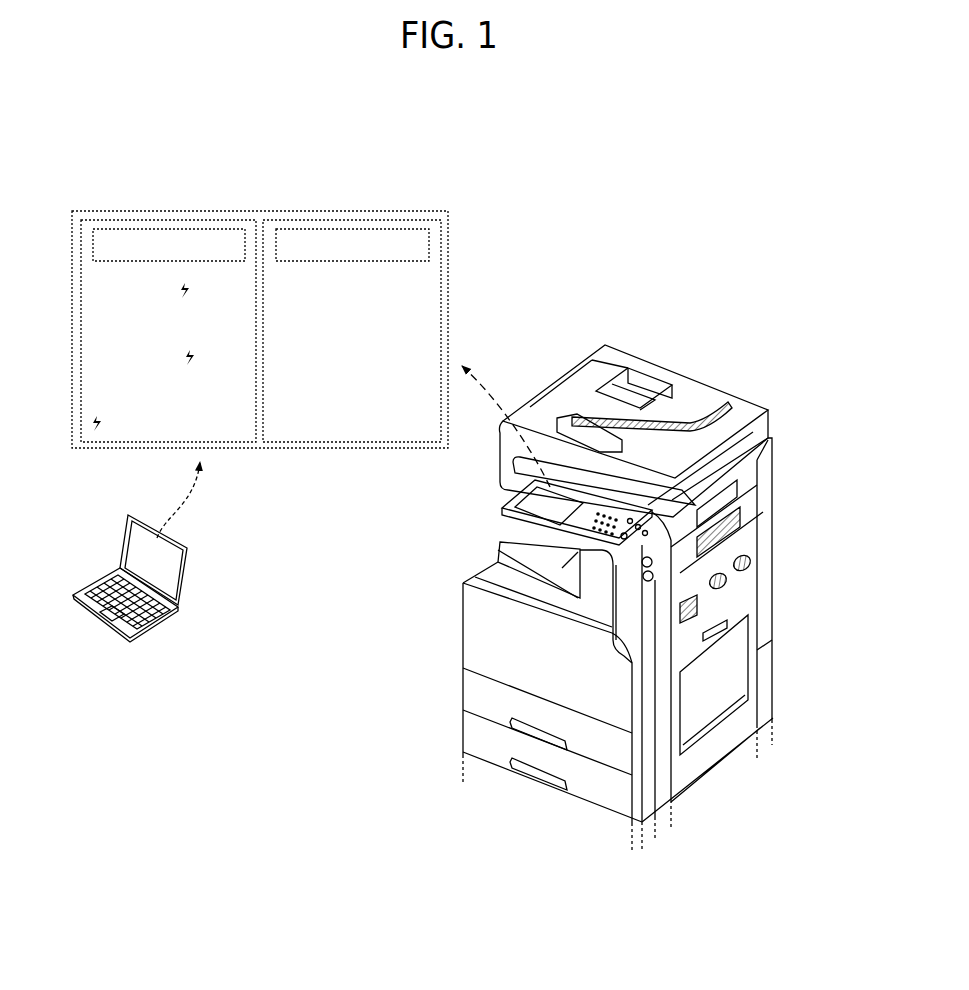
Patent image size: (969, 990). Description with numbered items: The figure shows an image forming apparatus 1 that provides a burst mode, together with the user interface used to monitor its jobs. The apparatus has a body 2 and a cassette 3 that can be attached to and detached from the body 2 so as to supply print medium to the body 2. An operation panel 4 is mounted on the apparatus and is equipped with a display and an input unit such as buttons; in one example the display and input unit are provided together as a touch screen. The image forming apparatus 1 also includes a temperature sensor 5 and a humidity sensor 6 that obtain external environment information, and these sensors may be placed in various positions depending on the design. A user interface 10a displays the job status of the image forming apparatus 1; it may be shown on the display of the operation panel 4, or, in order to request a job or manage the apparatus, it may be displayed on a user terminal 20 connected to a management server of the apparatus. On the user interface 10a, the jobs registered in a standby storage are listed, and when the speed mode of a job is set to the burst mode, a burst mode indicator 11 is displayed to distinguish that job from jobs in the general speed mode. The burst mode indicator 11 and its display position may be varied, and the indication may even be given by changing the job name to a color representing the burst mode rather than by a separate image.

The image forming apparatus 1 is at (600, 298).
The body 2 is at (778, 505).
The cassette 3 is at (475, 737).
The operation panel 4 is at (493, 498).
The temperature sensor 5 is at (655, 560).
The humidity sensor 6 is at (660, 576).
The user interface 10a is at (262, 210).
The burst mode indicator 11 is at (200, 292).
The user terminal 20 is at (143, 630).